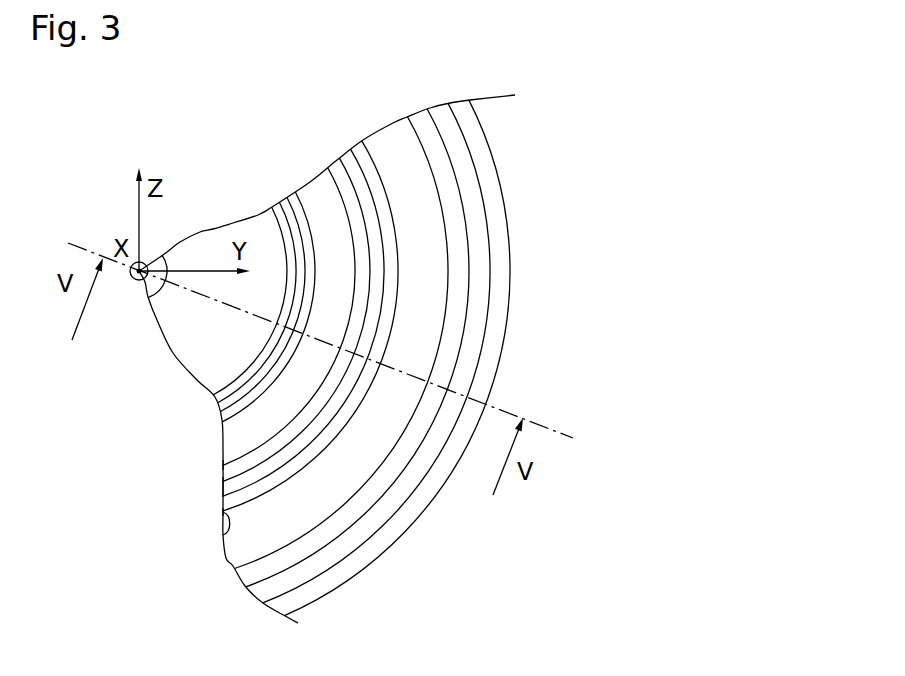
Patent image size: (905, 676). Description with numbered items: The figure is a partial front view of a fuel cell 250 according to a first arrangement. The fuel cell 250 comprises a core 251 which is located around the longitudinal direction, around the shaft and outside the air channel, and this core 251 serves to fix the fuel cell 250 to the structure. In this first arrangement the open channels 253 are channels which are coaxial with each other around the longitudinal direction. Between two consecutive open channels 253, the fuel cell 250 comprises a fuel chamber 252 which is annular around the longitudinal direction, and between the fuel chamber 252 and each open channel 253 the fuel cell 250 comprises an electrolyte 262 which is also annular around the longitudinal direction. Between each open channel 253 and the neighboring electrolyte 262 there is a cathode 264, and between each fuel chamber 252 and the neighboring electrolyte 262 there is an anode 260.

The fuel cell 250 is at (349, 337).
The core 251 is at (197, 330).
The fuel chamber 252 is at (335, 168).
The open channel 253 is at (398, 150).
The anode 260 is at (223, 480).
The electrolyte 262 is at (347, 156).
The cathode 264 is at (223, 463).